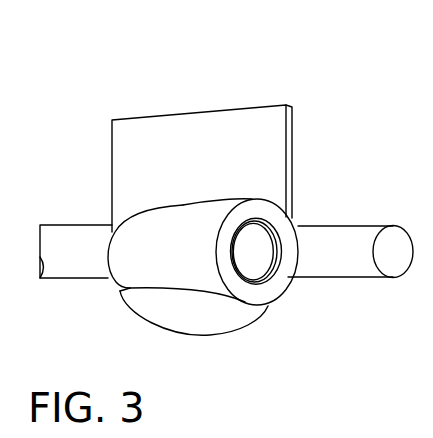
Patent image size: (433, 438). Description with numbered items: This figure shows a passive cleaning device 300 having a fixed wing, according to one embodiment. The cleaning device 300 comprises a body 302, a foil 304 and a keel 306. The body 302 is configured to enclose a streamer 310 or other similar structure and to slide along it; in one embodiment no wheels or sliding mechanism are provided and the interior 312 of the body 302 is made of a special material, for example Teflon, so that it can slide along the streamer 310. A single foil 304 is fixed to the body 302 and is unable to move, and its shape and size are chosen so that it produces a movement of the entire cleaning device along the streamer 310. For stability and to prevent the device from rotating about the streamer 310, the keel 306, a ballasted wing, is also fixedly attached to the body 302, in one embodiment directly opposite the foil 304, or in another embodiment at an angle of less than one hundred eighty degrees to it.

The cleaning device 300 is at (238, 57).
The body 302 is at (181, 255).
The foil 304 is at (273, 158).
The keel 306 is at (168, 304).
The streamer 310 is at (353, 227).
The interior 312 is at (258, 252).